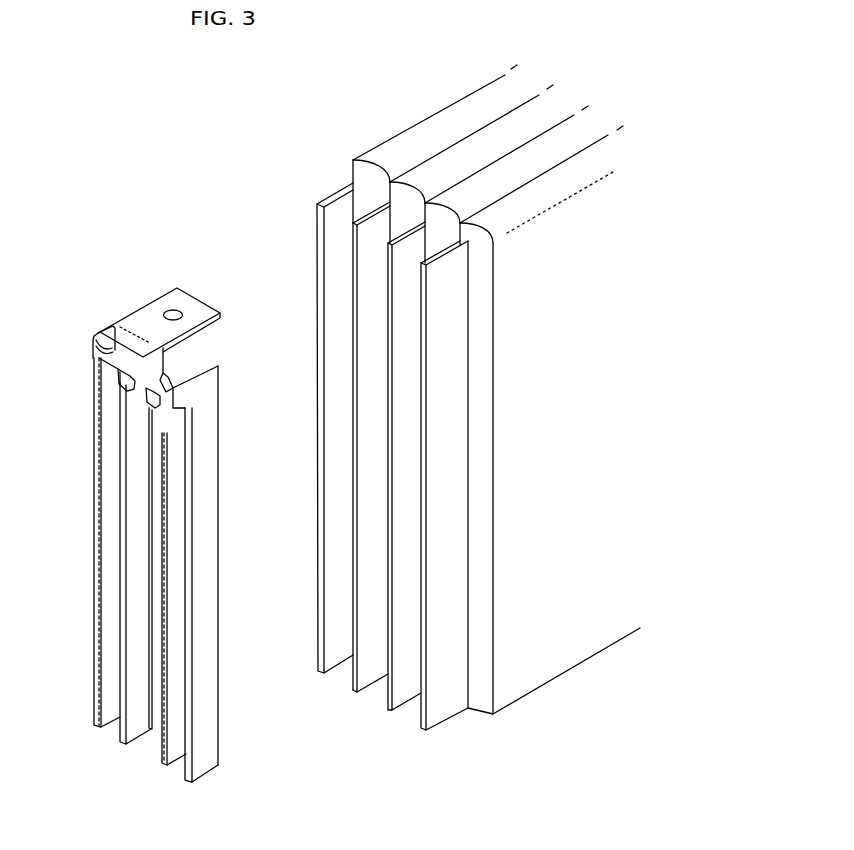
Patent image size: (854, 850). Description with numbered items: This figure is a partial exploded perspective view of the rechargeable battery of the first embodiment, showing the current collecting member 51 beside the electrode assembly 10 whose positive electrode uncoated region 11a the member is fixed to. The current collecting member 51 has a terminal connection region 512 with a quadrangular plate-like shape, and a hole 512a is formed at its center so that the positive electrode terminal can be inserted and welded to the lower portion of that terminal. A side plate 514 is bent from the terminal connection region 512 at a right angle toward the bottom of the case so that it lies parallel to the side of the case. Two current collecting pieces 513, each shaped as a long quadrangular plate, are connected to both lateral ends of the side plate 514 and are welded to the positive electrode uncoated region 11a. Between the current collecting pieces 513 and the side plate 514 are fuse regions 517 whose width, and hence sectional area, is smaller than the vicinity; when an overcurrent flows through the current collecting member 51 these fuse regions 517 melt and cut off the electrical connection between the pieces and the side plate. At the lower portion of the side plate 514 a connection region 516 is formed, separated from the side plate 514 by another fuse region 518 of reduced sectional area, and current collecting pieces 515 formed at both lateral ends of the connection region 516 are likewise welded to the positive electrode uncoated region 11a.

The battery module (stack of battery cells) 10 is at (478, 428).
The positive electrode uncoated region 11a is at (445, 707).
The current collecting member 51 is at (156, 507).
The terminal connection region 512 is at (153, 308).
The hole 512a is at (163, 310).
The current collecting piece 513 is at (110, 500).
The side plate 514 is at (133, 348).
The current collecting piece 515 is at (138, 542).
The connection region 516 is at (138, 410).
The fuse region 517 is at (107, 355).
The fuse region 518 is at (137, 398).